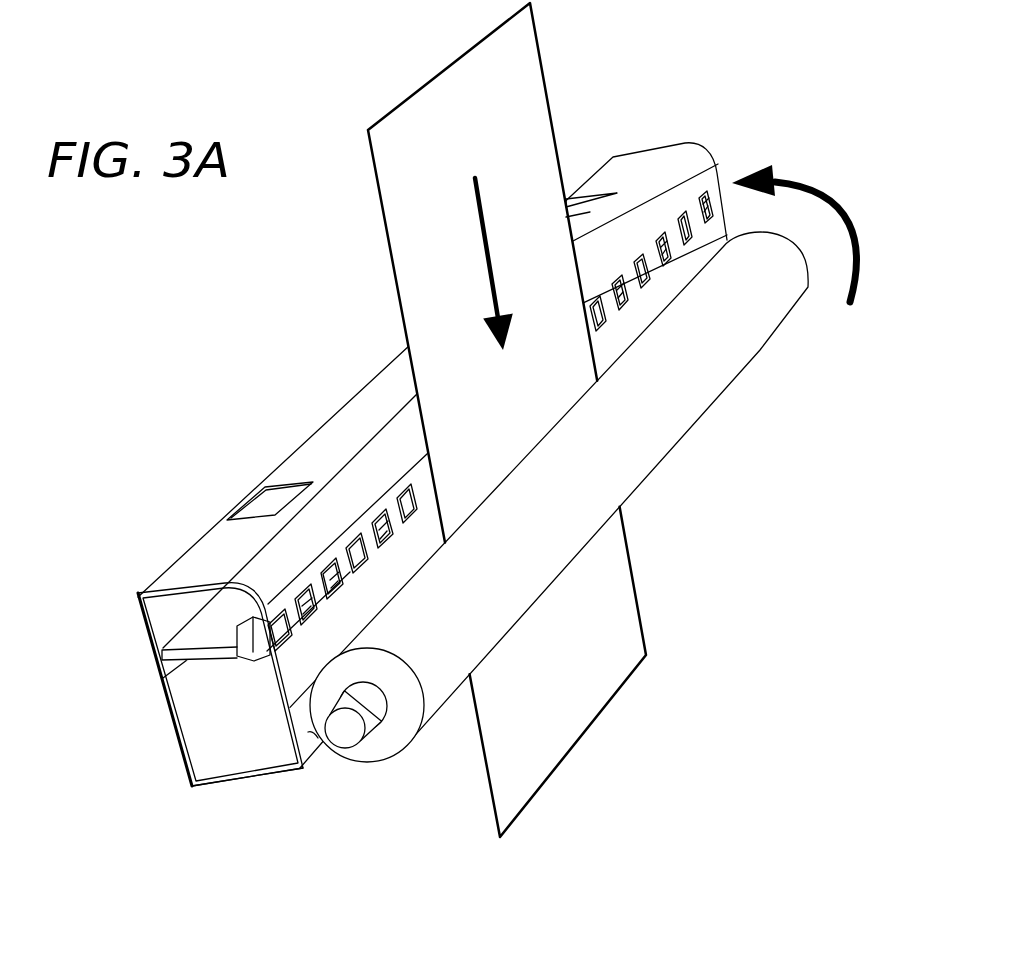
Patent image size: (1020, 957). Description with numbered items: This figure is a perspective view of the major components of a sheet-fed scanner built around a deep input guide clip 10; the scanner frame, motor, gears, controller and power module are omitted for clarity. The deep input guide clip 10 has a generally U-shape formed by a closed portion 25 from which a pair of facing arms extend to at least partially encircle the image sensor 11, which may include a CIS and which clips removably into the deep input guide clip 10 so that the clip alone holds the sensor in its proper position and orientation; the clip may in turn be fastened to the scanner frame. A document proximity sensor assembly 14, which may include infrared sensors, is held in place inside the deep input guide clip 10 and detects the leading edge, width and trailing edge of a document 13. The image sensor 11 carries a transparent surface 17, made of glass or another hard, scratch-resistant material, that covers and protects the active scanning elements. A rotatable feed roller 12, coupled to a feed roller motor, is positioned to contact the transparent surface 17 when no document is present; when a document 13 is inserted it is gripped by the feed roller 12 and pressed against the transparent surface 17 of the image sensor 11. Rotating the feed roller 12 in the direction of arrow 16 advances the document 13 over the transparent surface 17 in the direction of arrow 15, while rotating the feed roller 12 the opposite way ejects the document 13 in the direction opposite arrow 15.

The deep input guide clip 10 is at (317, 453).
The image sensor 11 is at (203, 762).
The feed roller 12 is at (680, 413).
The document 13 is at (391, 148).
The document proximity sensor assembly 14 is at (210, 660).
The arrow 15 is at (493, 242).
The arrow 16 is at (835, 203).
The transparent surface 17 is at (309, 740).
The closed portion 25 is at (195, 567).